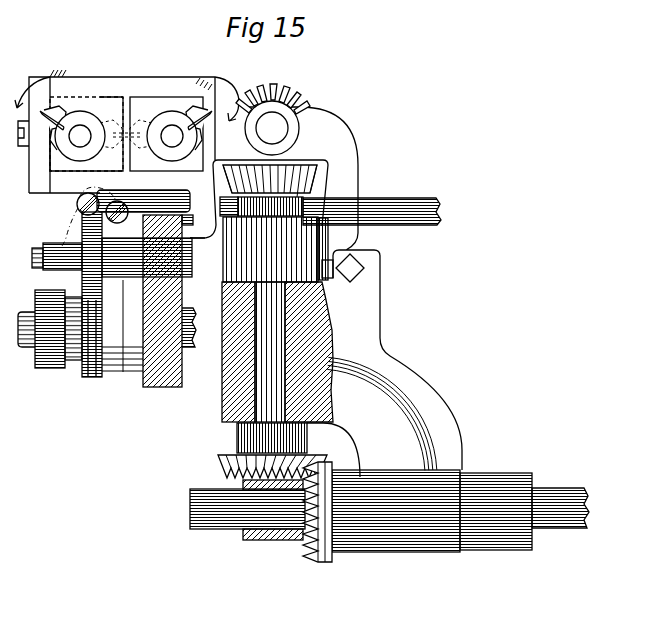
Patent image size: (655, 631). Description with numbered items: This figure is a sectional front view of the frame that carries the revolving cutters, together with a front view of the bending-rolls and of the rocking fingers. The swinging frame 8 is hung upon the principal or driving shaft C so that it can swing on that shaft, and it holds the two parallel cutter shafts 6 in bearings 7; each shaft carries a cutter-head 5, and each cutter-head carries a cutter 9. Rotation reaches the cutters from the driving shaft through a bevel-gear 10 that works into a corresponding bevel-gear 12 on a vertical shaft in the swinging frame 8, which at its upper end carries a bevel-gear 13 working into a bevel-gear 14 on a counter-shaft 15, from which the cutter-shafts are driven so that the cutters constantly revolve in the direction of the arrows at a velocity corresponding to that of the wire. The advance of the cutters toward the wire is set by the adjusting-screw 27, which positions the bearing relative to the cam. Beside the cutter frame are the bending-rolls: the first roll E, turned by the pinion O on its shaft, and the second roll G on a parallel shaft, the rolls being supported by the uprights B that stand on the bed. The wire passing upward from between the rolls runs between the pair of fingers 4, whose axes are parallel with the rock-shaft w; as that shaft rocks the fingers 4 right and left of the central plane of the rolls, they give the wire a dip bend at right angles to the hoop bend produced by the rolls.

The fingers 4 is at (78, 203).
The cutter-heads 5 is at (126, 128).
The shafts 6 is at (126, 136).
The bearings 7 is at (126, 134).
The swinging frame 8 is at (113, 61).
The cutter 9 is at (125, 120).
The bevel-gear 10 is at (317, 521).
The bevel-gear 12 is at (270, 450).
The bevel-gear 13 is at (259, 221).
The bevel-gear 14 is at (316, 93).
The counter-shaft 15 is at (272, 128).
The adjusting-screw 27 is at (343, 268).
The uprights B is at (146, 298).
The driving shaft C is at (379, 511).
The first roll E is at (118, 305).
The second roll G is at (92, 294).
The pinion O is at (50, 328).
The rock-shaft w is at (372, 203).